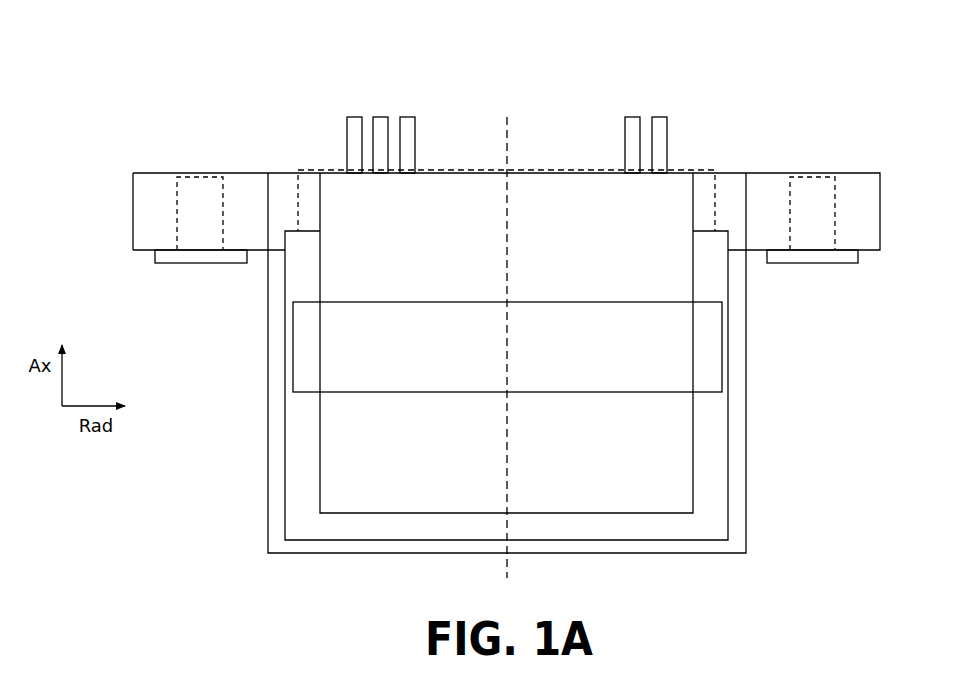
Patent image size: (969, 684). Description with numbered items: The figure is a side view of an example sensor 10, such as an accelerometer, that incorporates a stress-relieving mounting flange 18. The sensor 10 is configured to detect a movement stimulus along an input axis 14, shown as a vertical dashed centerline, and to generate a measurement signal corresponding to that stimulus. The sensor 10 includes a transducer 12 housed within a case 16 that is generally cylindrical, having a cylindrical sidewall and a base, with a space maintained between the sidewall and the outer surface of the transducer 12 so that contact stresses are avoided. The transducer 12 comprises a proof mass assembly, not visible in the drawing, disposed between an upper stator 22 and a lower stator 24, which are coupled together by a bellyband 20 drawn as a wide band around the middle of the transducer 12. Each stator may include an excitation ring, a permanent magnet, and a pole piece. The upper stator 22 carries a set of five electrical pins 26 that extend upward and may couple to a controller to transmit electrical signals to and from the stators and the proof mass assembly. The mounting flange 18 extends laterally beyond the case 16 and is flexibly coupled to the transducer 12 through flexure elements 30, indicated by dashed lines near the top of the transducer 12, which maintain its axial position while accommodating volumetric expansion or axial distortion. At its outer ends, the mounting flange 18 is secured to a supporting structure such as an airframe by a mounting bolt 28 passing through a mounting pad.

The sensor 10 is at (767, 82).
The transducer 12 is at (563, 103).
The input axis 14 is at (507, 145).
The case 16 is at (737, 508).
The mounting flange 18 is at (870, 190).
The bellyband 20 is at (680, 338).
The upper stator 22 is at (680, 259).
The lower stator 24 is at (680, 422).
The electrical pins 26 is at (667, 137).
The mounting bolt 28 is at (820, 260).
The flexure elements 30 is at (702, 185).